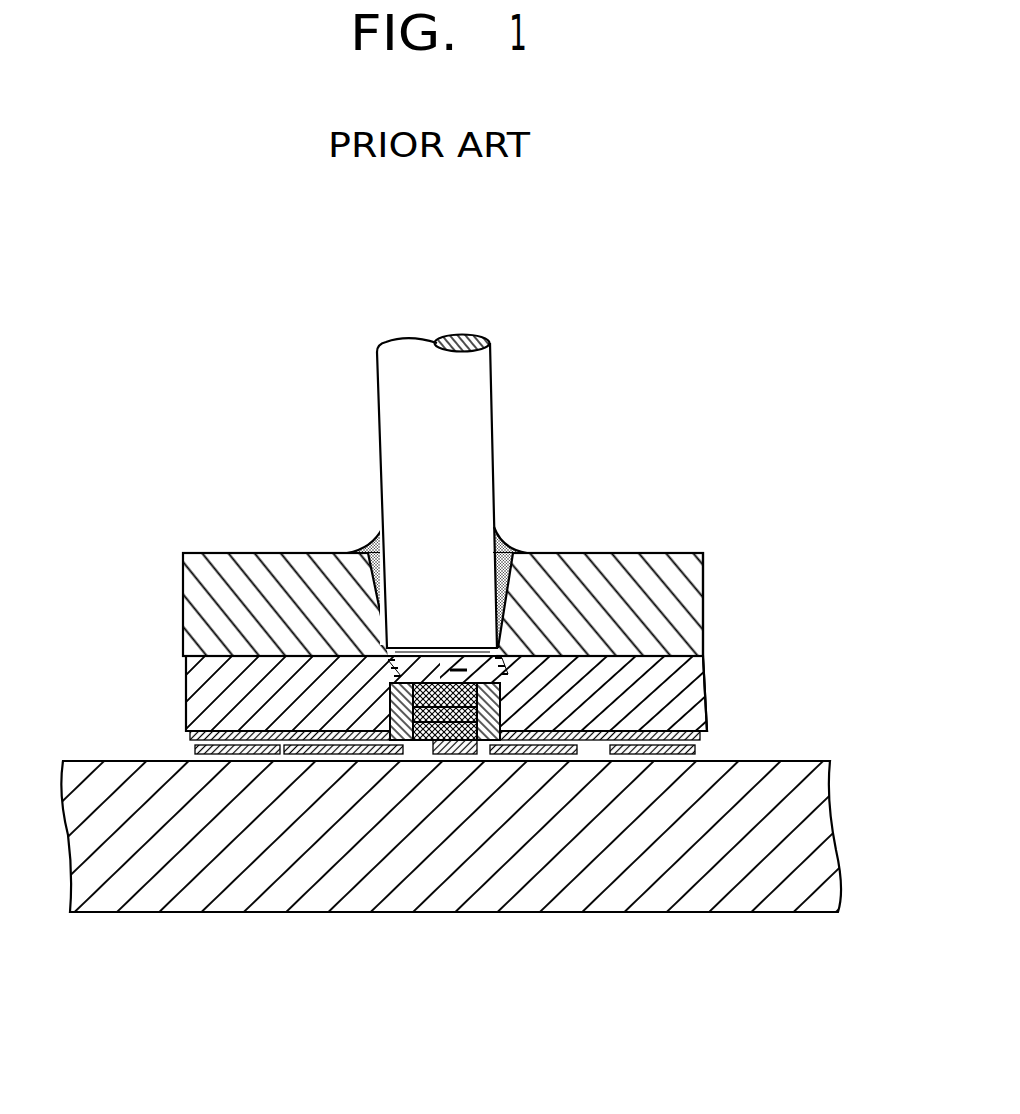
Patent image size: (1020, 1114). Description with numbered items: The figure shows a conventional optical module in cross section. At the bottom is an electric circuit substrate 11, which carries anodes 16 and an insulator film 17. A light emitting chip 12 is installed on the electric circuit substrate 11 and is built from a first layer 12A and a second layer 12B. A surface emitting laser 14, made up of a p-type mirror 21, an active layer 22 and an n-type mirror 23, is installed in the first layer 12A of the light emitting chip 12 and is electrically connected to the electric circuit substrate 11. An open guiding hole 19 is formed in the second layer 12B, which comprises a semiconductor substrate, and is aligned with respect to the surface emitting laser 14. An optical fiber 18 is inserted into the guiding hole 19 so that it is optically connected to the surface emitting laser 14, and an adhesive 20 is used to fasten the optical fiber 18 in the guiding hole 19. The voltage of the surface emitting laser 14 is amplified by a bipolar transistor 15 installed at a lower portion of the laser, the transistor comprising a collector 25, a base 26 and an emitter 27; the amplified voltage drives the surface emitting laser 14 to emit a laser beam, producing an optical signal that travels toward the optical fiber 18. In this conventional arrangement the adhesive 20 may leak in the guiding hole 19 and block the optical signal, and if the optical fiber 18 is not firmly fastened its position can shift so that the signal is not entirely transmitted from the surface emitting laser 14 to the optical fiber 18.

The electric circuit substrate 11 is at (577, 900).
The light emitting chip 12 is at (797, 590).
The first layer 12A is at (697, 701).
The second layer 12B is at (693, 615).
The surface emitting laser 14 is at (630, 457).
The bipolar transistor 15 is at (180, 453).
The anodes 16 is at (213, 760).
The insulator film 17 is at (290, 760).
The optical fiber 18 is at (478, 395).
The guiding hole 19 is at (366, 552).
The adhesive 20 is at (435, 650).
The p-type mirror 21 is at (502, 658).
The active layer 22 is at (505, 666).
The n-type mirror 23 is at (508, 674).
The collector 25 is at (388, 660).
The base 26 is at (391, 668).
The emitter 27 is at (394, 676).